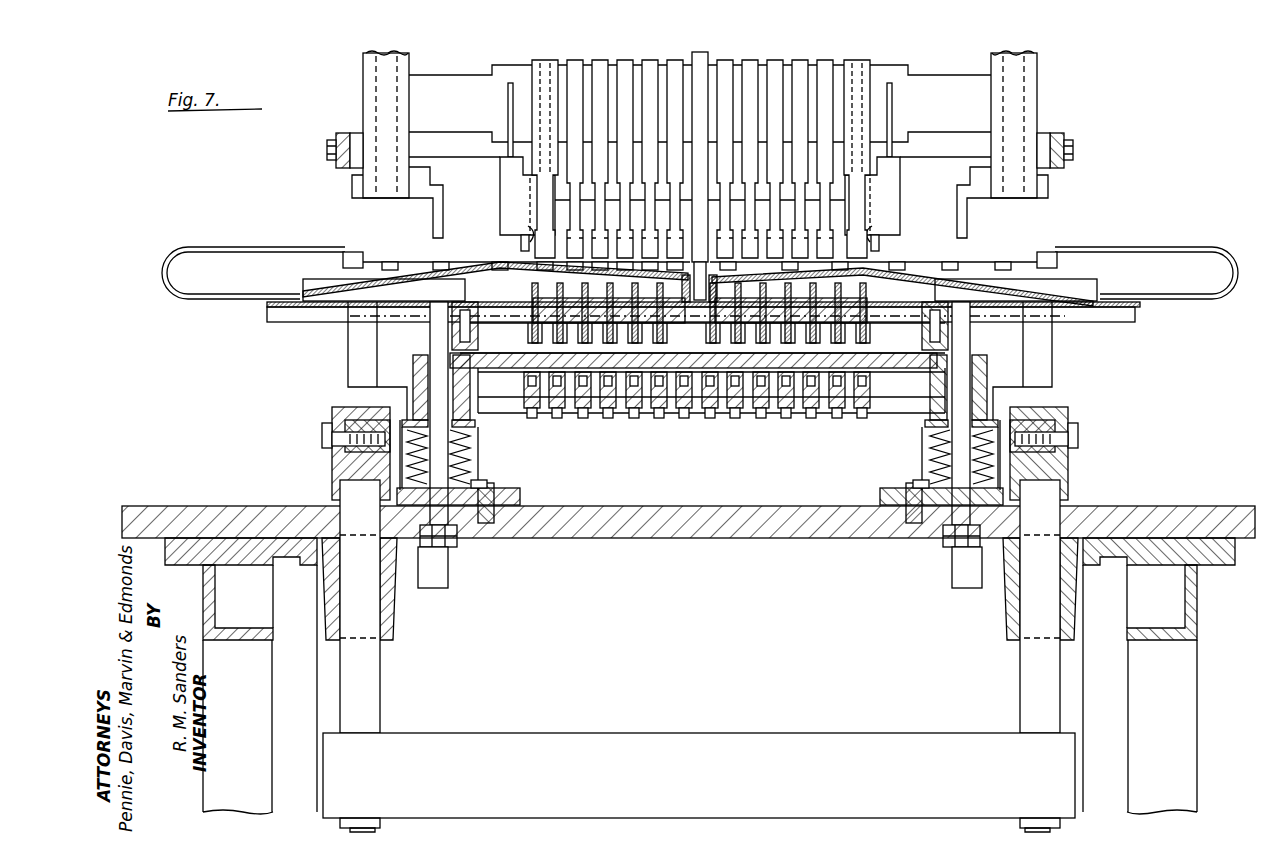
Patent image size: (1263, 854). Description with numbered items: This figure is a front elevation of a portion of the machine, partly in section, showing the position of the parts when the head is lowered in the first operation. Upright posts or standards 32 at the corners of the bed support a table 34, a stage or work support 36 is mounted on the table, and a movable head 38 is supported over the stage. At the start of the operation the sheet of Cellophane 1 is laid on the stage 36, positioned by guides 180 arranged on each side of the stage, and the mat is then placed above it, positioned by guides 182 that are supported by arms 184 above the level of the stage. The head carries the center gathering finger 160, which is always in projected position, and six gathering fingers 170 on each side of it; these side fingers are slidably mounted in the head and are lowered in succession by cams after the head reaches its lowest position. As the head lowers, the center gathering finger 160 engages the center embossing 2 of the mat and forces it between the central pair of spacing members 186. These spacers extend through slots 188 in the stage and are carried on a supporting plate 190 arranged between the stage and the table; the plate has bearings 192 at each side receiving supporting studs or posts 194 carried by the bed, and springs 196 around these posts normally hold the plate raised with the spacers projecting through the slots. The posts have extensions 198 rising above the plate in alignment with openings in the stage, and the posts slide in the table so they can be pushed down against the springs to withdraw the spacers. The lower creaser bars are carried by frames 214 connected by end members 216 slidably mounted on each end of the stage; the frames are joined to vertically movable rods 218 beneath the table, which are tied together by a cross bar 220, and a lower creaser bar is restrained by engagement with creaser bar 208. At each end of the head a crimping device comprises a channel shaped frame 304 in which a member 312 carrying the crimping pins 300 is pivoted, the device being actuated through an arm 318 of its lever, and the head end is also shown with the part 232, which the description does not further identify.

The sheet of Cellophane 1 is at (1040, 292).
The center embossing 2 is at (1012, 262).
The upright posts or standards 32 is at (215, 600).
The table 34 is at (1234, 506).
The stage or work support 36 is at (900, 298).
The movable head 38 is at (900, 68).
The center gathering finger 160 is at (699, 262).
The gathering fingers 170 is at (672, 246).
The guides 180 is at (303, 290).
The guides 182 is at (345, 252).
The arms 184 is at (199, 247).
The spacing members 186 is at (684, 290).
The slots 188 is at (592, 295).
The supporting plate 190 is at (518, 354).
The bearings 192 is at (413, 370).
The supporting studs or posts 194 is at (470, 441).
The springs 196 is at (462, 462).
The extensions 198 is at (430, 332).
The creaser bar 208 is at (473, 190).
The frames 214 is at (335, 476).
The end members 216 is at (332, 420).
The vertically movable rods 218 is at (380, 681).
The cross bar 220 is at (696, 738).
The pivot bolt 232 is at (342, 132).
The crimping pins 300 is at (704, 224).
The channel shaped frame 304 is at (504, 172).
The member 312 is at (520, 243).
The arm 318 is at (508, 100).